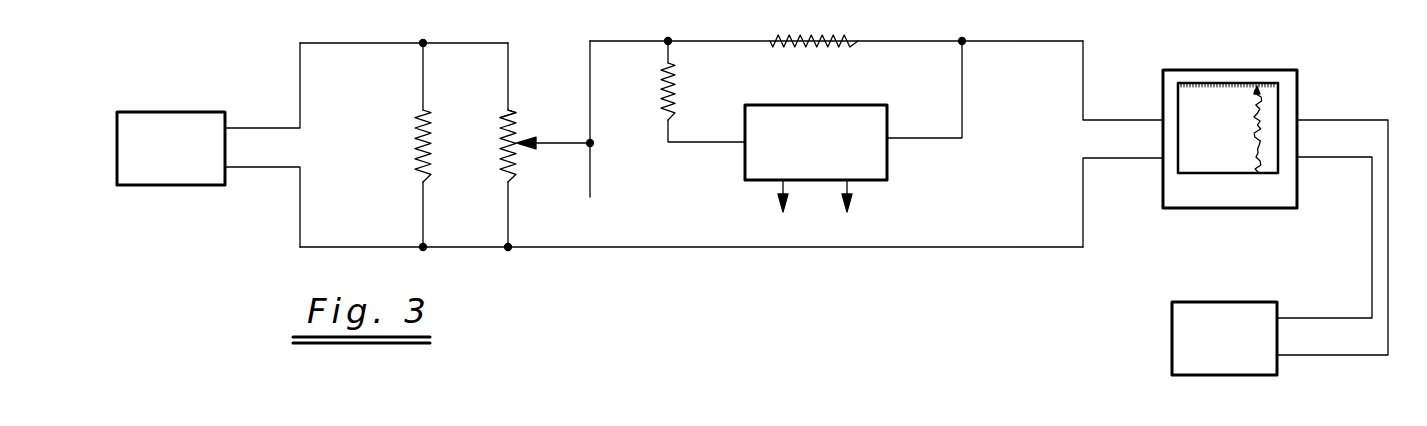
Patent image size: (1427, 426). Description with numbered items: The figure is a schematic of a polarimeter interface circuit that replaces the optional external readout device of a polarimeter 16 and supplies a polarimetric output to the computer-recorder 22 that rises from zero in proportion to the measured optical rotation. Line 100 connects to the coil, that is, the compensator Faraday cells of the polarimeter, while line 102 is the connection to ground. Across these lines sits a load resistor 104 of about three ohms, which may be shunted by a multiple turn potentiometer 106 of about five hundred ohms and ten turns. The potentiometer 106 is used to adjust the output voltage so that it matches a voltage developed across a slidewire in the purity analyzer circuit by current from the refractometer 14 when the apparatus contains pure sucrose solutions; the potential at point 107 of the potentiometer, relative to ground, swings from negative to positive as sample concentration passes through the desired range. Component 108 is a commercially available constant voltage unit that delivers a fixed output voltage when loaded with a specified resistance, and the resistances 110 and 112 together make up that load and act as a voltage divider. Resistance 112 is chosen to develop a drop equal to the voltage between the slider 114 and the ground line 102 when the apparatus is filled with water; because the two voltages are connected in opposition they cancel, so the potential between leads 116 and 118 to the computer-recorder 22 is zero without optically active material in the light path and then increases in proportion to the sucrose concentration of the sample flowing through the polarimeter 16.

The refractometer 14 is at (1234, 314).
The polarimeter 16 is at (178, 116).
The computer-recorder 22 is at (1230, 79).
The line 100 is at (300, 72).
The line 102 is at (300, 214).
The load resistor 104 is at (418, 152).
The multiple turn potentiometer 106 is at (512, 164).
The point of the potentiometer 107 is at (506, 111).
The constant voltage unit 108 is at (838, 110).
The resistance 110 is at (676, 97).
The resistance 112 is at (838, 38).
The slider 114 is at (548, 141).
The lead 116 is at (1083, 55).
The lead 118 is at (1083, 219).